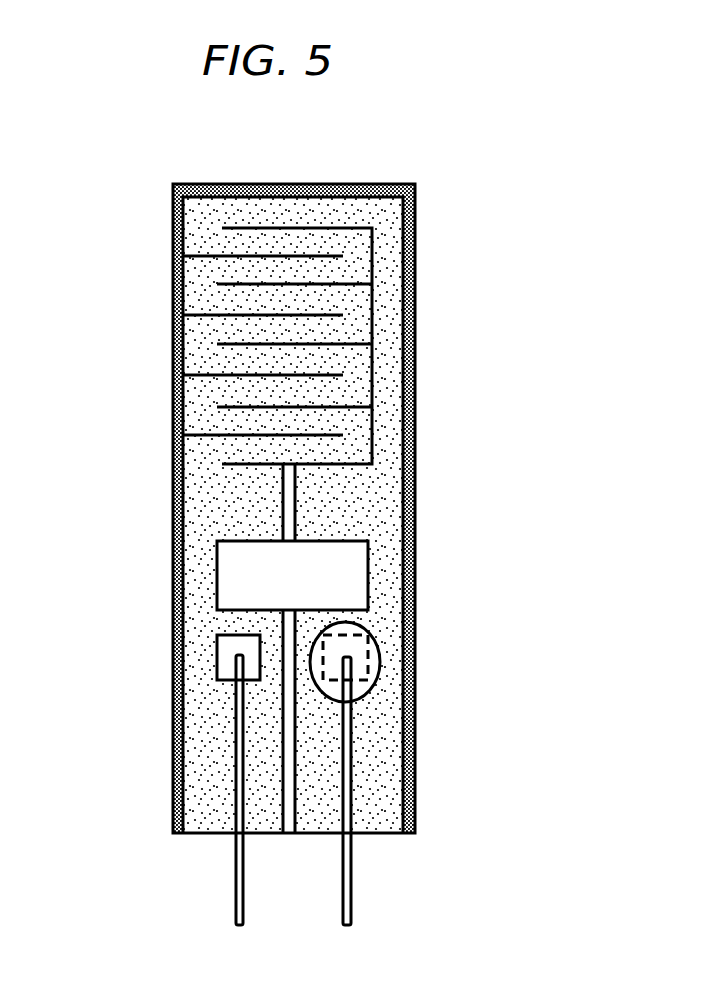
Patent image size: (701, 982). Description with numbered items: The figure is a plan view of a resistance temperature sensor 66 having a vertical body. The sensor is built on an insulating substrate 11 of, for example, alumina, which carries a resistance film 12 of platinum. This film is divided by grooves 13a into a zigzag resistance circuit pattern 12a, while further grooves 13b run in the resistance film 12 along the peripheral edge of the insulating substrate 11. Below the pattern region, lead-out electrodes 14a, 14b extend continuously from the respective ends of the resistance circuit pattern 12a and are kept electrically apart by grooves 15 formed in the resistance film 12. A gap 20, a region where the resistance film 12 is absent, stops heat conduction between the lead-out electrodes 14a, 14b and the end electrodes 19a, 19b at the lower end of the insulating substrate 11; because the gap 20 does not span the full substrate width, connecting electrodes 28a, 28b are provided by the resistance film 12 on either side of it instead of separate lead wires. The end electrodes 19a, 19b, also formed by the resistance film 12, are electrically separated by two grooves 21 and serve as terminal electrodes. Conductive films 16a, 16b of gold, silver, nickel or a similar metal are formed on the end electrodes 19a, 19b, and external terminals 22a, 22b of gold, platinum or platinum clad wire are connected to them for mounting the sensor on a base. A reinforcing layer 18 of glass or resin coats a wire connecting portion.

The resistance temperature sensor 66 is at (480, 148).
The insulating substrate 11 is at (428, 221).
The resistance film 12 is at (398, 323).
The resistance circuit pattern 12a is at (333, 278).
The grooves 13a is at (220, 314).
The grooves 13b is at (225, 195).
The grooves 15 is at (272, 500).
The lead-out electrode 14a is at (198, 507).
The lead-out electrode 14b is at (353, 530).
The gap 20 is at (343, 575).
The connecting electrode 28a is at (197, 580).
The connecting electrode 28b is at (387, 597).
The conductive film 16a is at (200, 661).
The conductive film 16b is at (355, 650).
The reinforcing layer 18 is at (370, 668).
The end electrode 19a is at (200, 747).
The end electrode 19b is at (387, 727).
The grooves 21 is at (280, 800).
The external terminal 22a is at (235, 860).
The external terminal 22b is at (355, 892).